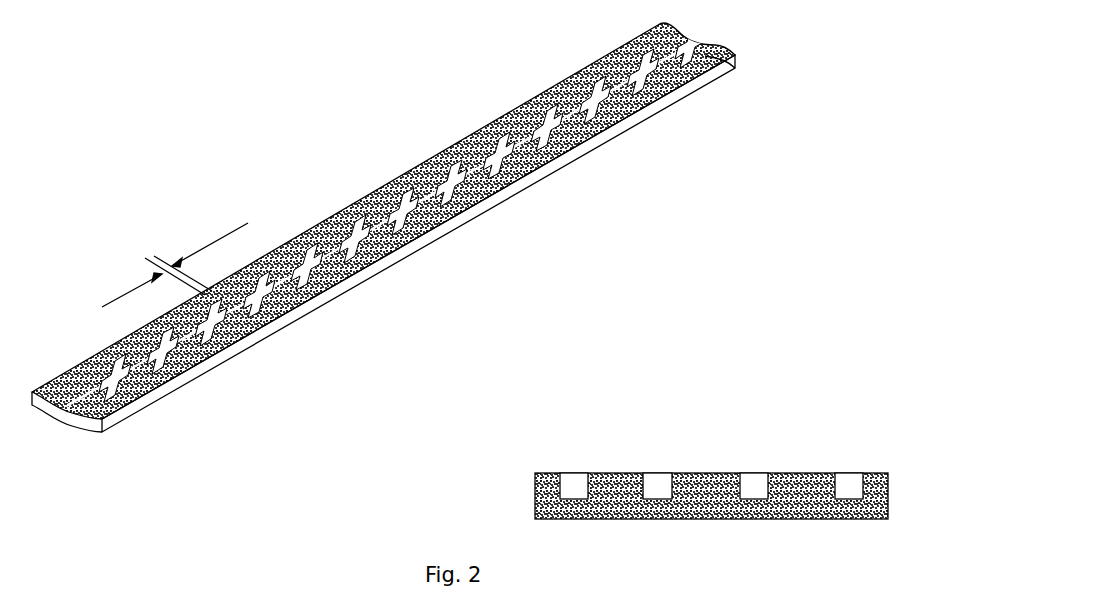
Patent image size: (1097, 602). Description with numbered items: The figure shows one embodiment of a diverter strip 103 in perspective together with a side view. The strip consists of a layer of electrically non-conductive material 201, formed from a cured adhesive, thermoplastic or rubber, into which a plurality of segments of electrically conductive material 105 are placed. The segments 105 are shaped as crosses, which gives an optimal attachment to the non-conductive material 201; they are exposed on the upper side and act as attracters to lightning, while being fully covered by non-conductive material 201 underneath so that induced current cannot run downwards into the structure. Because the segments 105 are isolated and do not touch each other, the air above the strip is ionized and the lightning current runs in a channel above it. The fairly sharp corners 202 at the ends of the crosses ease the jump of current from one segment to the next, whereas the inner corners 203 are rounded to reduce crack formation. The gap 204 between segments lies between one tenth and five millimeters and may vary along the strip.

The sensor strip 103 is at (578, 53).
The segments of electrically conductive material 105 is at (393, 210).
The layer of electrically non-conductive material 201 is at (608, 473).
The sharp corners 202 is at (318, 310).
The inner corners of the crosses 203 is at (235, 340).
The gap between the segments 204 is at (170, 268).